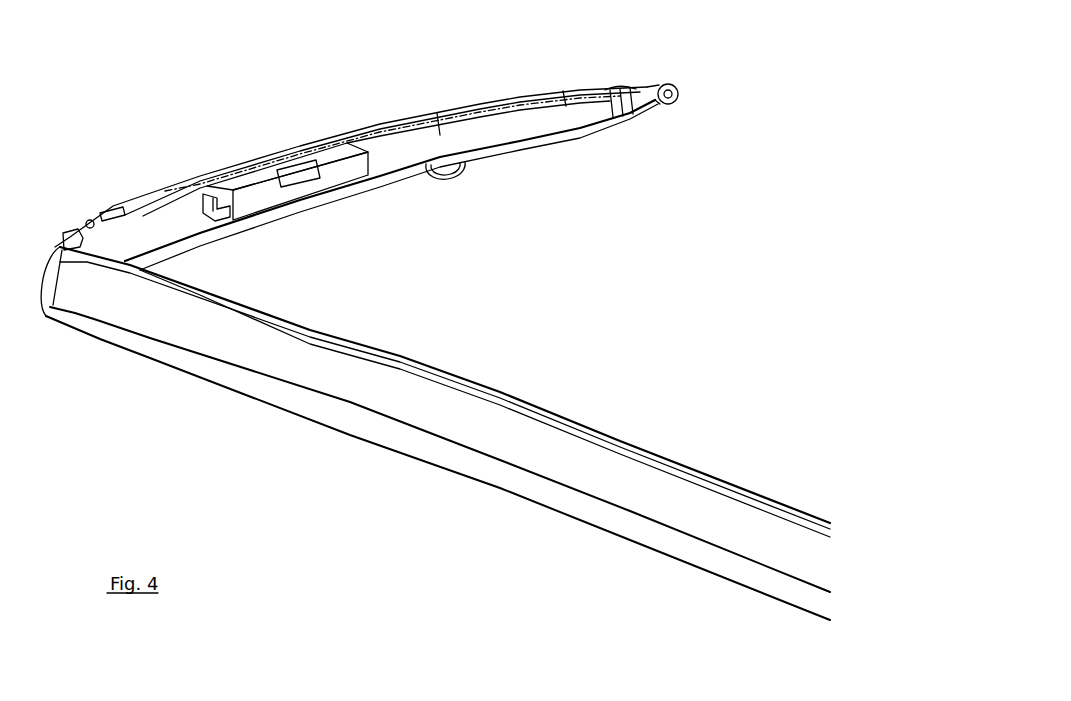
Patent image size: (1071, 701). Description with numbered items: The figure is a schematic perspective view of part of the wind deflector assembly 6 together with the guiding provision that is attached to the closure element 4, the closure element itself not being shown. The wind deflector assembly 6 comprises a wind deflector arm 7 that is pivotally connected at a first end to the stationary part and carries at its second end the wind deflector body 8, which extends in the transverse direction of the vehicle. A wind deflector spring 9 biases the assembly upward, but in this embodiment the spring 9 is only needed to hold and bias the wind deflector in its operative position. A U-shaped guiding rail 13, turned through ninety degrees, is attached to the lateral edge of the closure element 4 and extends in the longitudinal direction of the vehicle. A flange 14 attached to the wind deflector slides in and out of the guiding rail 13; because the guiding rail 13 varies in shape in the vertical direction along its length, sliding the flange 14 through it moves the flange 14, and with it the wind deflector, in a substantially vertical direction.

The closure element 4 is at (349, 172).
The wind deflector assembly 6 is at (394, 118).
The wind deflector arm 7 is at (438, 112).
The wind deflector body 8 is at (233, 392).
The wind deflector spring 9 is at (423, 183).
The guiding rail 13 is at (205, 212).
The flange 14 is at (301, 177).